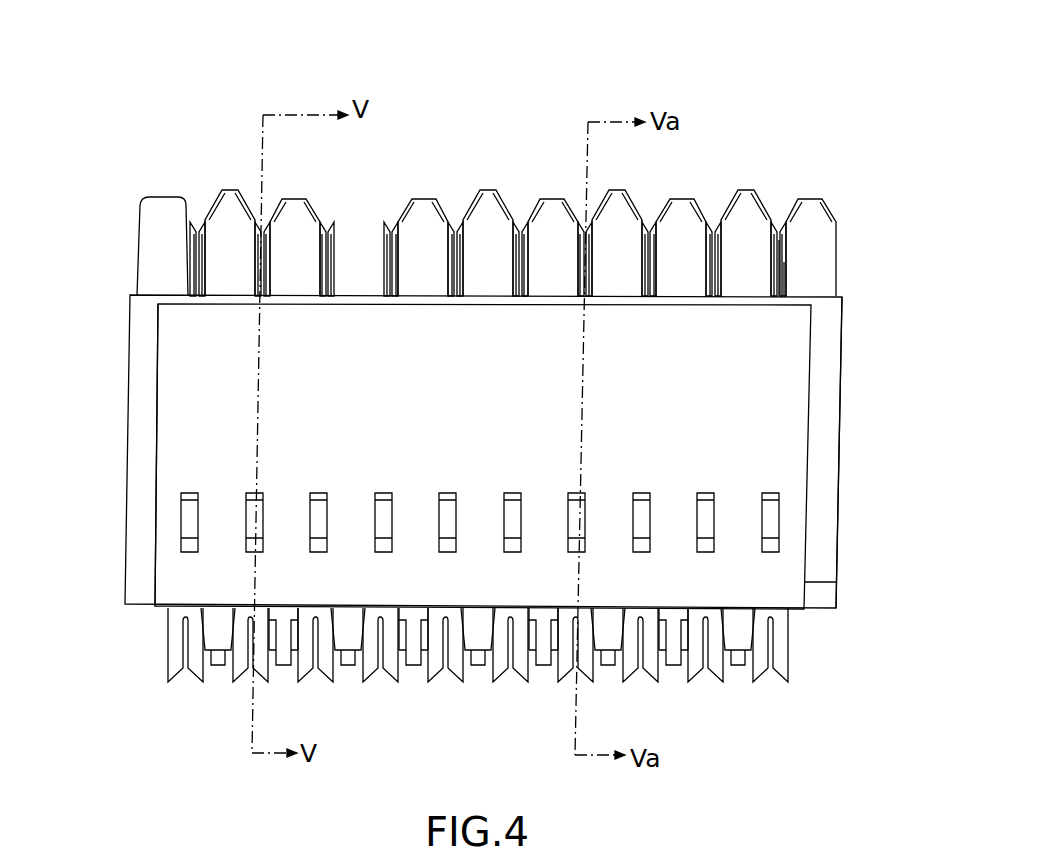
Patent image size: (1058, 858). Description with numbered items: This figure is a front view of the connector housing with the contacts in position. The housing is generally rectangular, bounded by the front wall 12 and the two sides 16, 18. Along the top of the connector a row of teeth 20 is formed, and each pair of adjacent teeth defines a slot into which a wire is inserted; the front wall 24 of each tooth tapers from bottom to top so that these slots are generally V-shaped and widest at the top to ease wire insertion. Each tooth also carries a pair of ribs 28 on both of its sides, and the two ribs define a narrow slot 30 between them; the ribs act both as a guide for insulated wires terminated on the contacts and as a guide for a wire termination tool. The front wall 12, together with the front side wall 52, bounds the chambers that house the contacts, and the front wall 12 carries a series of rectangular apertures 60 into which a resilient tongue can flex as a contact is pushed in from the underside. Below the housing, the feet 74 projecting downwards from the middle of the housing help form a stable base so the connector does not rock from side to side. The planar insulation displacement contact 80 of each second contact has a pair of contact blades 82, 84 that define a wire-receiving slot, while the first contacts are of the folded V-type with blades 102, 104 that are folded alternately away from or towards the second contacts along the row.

The front wall 12 is at (465, 424).
The side 16 is at (127, 438).
The side 18 is at (840, 402).
The teeth 20 is at (170, 222).
The front wall of tooth 24 is at (306, 261).
The ribs 28 is at (232, 213).
The narrow slot 30 is at (712, 220).
The front side wall 52 is at (158, 397).
The rectangular aperture 60 is at (521, 528).
The feet 74 is at (347, 665).
The planar insulation displacement contact 80 is at (455, 643).
The contact blade 82 is at (177, 660).
The contact blade 84 is at (197, 667).
The blade 102 is at (780, 258).
The blade 104 is at (787, 278).